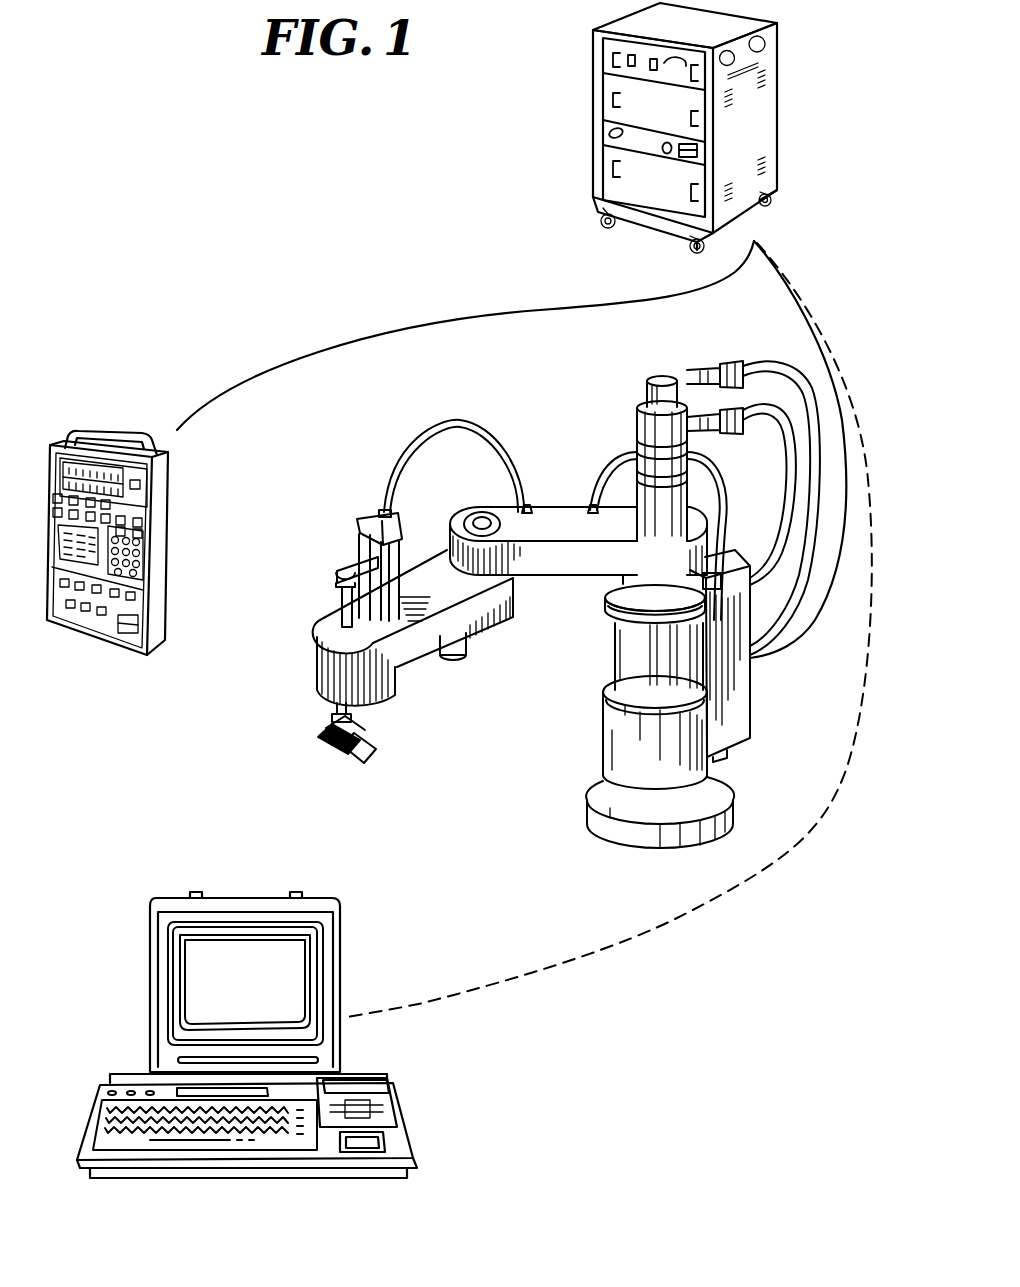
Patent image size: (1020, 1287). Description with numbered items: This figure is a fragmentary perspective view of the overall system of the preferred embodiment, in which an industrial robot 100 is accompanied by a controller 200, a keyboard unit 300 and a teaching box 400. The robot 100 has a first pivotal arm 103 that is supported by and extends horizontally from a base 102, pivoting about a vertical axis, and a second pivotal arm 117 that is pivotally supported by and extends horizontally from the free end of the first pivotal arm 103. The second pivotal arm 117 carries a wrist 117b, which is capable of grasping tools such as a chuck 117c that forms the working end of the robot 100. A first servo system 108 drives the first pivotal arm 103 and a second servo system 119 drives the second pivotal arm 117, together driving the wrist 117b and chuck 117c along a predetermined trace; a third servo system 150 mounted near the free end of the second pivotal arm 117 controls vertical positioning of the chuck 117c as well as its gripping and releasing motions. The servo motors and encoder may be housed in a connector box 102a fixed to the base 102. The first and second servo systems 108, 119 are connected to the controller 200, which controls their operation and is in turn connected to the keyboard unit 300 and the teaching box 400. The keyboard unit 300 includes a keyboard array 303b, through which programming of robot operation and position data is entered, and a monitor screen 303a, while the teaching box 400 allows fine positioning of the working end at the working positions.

The industrial robot 100 is at (551, 603).
The base 102 is at (623, 685).
The connector box 102a is at (733, 680).
The first pivotal arm 103 is at (565, 516).
The first servo system 108 is at (598, 650).
The second pivotal arm 117 is at (410, 650).
The wrist 117b is at (335, 712).
The chuck 117c is at (373, 744).
The second servo system 119 is at (629, 428).
The third servo system 150 is at (316, 536).
The controller 200 is at (780, 113).
The keyboard unit 300 is at (266, 1058).
The monitor screen 303a is at (293, 963).
The keyboard array 303b is at (253, 1140).
The teaching box 400 is at (140, 427).